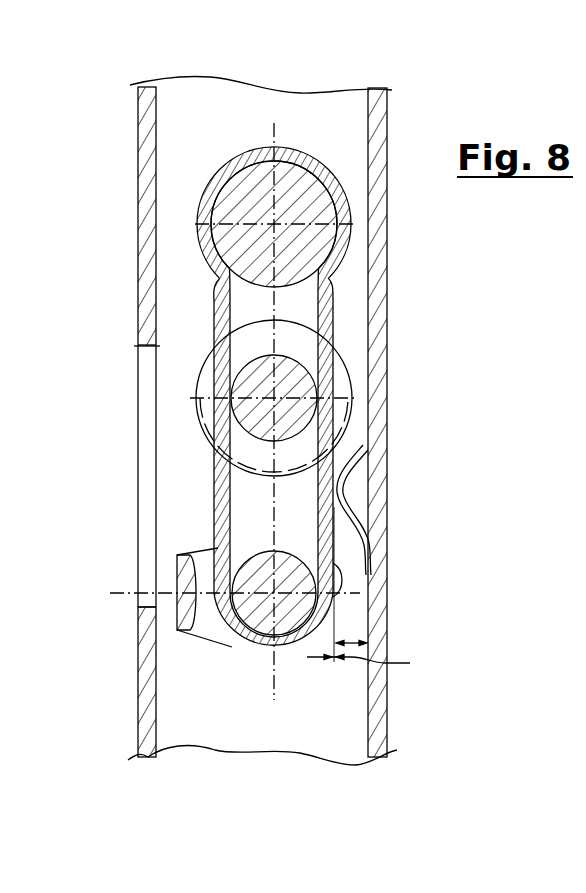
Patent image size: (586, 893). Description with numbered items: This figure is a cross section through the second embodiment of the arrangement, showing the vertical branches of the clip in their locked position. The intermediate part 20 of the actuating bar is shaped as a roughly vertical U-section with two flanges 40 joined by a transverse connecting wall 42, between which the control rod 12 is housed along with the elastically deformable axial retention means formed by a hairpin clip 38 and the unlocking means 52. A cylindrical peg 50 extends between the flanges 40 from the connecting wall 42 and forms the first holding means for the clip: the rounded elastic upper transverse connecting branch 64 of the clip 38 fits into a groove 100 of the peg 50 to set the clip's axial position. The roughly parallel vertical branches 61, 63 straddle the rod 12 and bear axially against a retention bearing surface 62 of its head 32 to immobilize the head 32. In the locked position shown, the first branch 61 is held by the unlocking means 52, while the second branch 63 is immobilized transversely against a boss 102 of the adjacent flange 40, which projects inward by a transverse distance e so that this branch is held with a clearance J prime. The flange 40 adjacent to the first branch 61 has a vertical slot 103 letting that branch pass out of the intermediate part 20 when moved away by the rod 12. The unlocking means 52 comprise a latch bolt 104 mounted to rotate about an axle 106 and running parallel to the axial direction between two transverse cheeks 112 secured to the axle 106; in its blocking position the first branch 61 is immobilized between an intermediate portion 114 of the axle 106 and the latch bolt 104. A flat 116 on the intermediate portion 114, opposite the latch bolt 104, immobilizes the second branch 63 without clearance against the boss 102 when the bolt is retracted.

The intermediate part 20 is at (394, 102).
The flange 40 is at (388, 180).
The connecting wall 42 is at (317, 118).
The upper transverse connecting branch 64 is at (320, 157).
The groove 100 is at (205, 193).
The cylindrical peg 50 is at (320, 248).
The retention bearing surface 62 is at (212, 323).
The first vertical branch 61 is at (218, 503).
The hairpin clip 38 is at (347, 308).
The head 32 is at (360, 351).
The control rod 12 is at (240, 405).
The second vertical branch 63 is at (366, 444).
The boss 102 is at (352, 490).
The vertical slot 103 is at (147, 378).
The transverse cheek 112 is at (248, 543).
The latch bolt 104 is at (182, 585).
The axle 106 is at (267, 632).
The intermediate portion 114 is at (246, 626).
The flat 116 is at (287, 650).
The unlocking means 52 is at (288, 648).